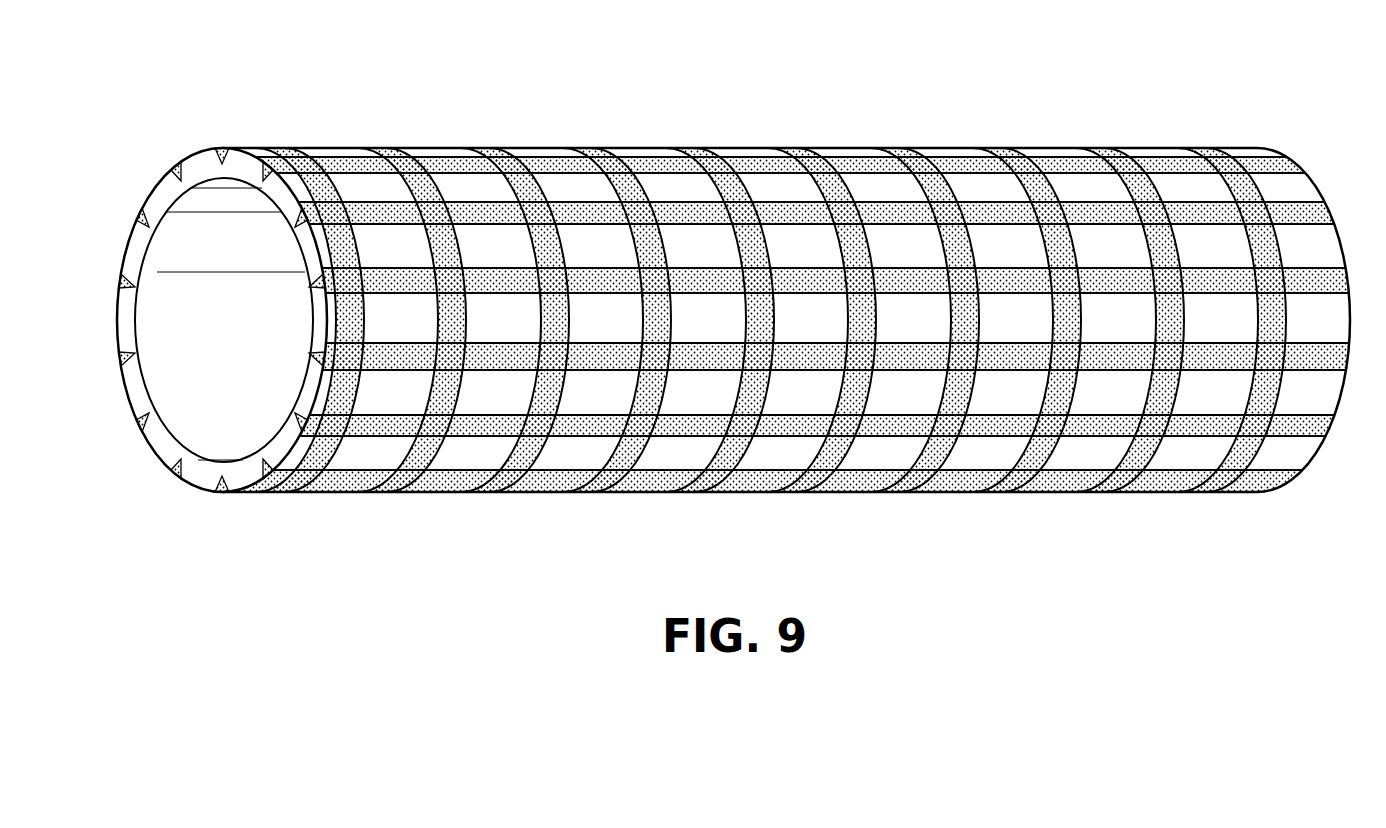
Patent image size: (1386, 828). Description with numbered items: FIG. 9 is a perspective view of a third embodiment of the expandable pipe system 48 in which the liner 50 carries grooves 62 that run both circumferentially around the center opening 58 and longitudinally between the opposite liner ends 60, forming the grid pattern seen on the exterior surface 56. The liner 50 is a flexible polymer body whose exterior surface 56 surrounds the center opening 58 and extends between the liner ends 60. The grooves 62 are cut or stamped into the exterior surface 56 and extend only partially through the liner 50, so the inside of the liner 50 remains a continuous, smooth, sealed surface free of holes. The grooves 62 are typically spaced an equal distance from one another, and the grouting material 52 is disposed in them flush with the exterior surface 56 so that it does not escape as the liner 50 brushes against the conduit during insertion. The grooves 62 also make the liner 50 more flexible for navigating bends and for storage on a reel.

The tubular mesh implant 48 is at (733, 313).
The tubular body 50 is at (786, 294).
The circumferential struts 52 is at (1233, 188).
The longitudinal struts 56 is at (313, 158).
The lumen 58 is at (236, 331).
The end portion 60 is at (230, 152).
The strut end protrusions 62 is at (262, 169).